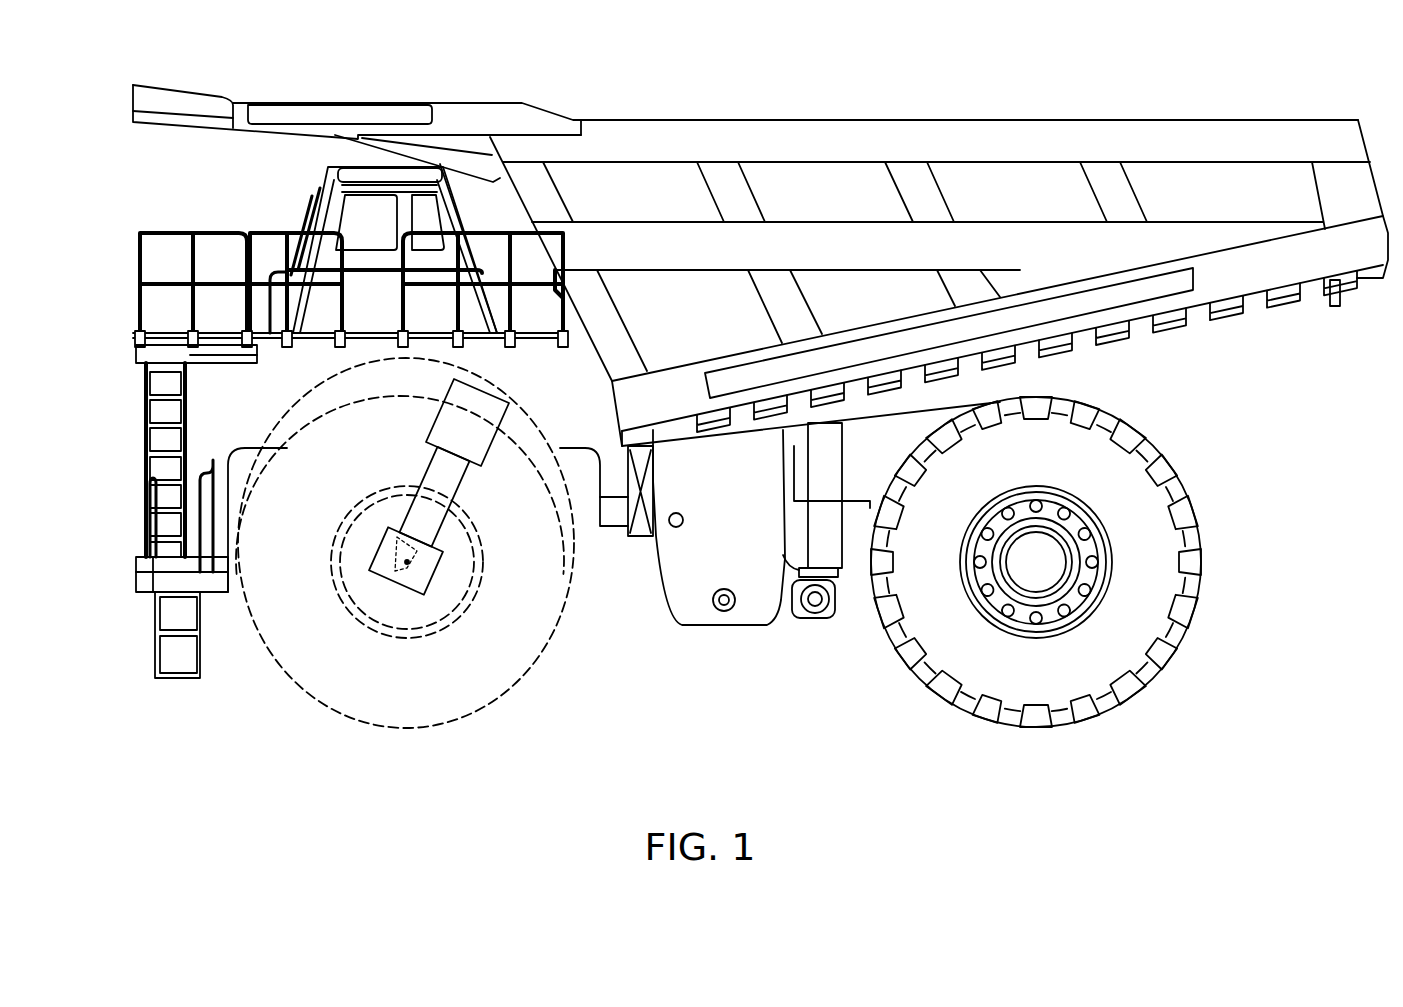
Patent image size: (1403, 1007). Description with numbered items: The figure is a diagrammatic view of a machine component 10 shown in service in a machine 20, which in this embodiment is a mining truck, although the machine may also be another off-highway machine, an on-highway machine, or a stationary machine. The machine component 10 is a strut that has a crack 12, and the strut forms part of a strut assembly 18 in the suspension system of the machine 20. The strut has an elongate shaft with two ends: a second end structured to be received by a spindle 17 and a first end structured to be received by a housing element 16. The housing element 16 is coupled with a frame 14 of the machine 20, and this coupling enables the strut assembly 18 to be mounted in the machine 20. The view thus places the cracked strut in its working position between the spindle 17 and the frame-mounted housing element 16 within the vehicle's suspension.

The machine component 10 is at (460, 499).
The crack 12 is at (413, 530).
The frame 14 is at (575, 380).
The housing element 16 is at (507, 420).
The spindle 17 is at (375, 573).
The strut assembly 18 is at (412, 418).
The machine 20 is at (673, 119).